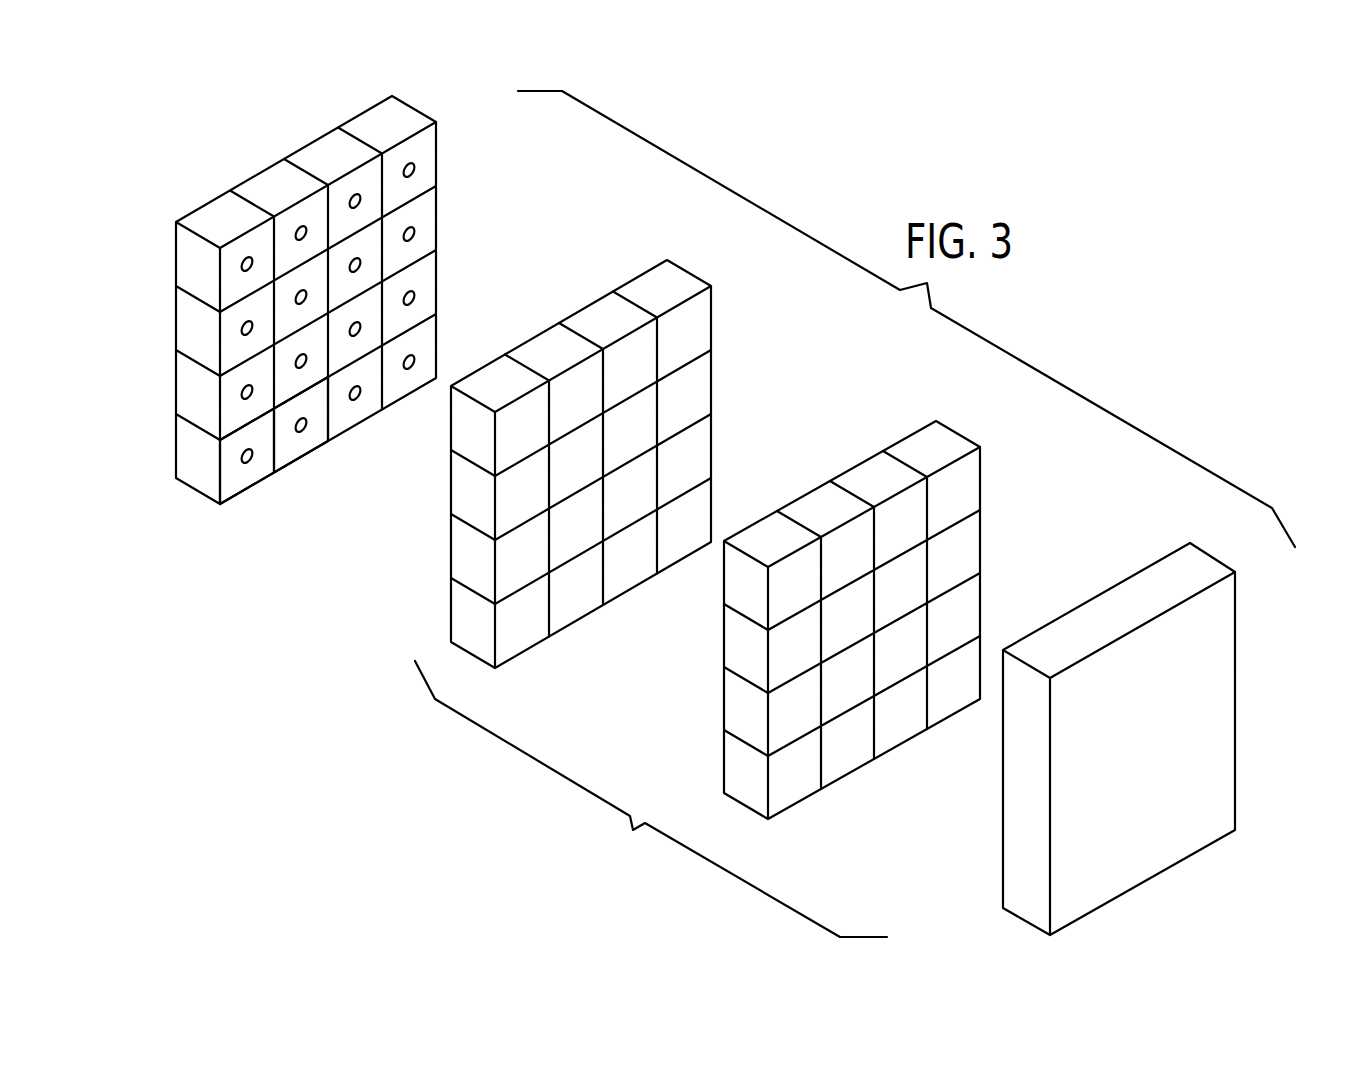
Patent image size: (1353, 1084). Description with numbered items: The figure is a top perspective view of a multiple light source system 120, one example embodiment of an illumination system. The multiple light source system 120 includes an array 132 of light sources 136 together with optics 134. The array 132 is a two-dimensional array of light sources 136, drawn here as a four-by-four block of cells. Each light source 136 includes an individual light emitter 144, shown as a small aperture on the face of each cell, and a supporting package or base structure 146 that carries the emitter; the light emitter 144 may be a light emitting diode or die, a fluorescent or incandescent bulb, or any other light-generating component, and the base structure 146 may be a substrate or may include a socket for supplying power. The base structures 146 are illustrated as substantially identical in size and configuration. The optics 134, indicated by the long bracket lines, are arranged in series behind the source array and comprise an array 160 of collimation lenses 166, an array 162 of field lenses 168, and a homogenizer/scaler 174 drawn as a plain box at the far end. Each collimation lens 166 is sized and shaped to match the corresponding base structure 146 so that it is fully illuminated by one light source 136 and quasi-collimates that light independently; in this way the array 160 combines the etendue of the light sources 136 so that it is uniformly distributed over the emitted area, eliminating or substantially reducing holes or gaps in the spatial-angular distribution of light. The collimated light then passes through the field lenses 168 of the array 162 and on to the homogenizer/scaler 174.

The multiple light source system 120 is at (296, 334).
The array of light sources 132 is at (328, 334).
The optics 134 is at (855, 514).
The light source 136 is at (433, 163).
The light emitter 144 is at (298, 431).
The base structure 146 is at (313, 438).
The array of collimation lenses 160 is at (584, 461).
The array of field lenses 162 is at (888, 630).
The collimation lens 166 is at (582, 383).
The field lens 168 is at (913, 578).
The homogenizer/scaler 174 is at (1022, 788).